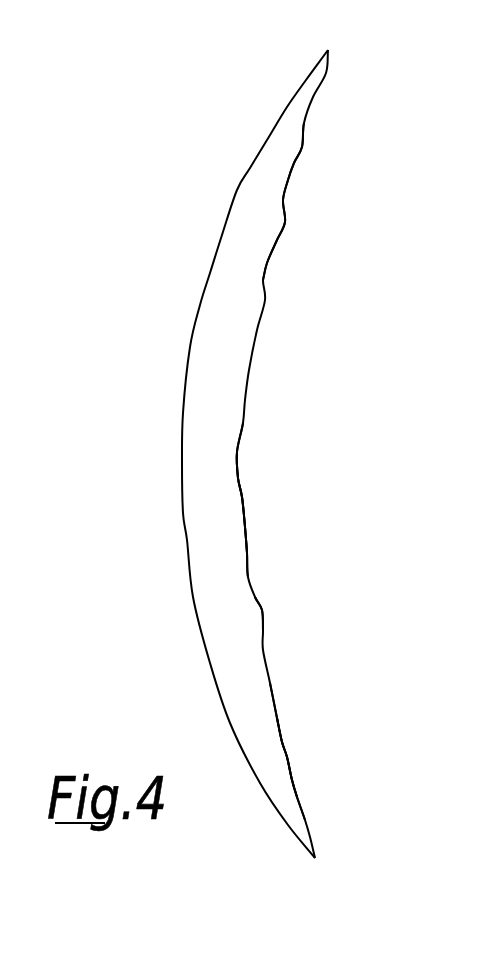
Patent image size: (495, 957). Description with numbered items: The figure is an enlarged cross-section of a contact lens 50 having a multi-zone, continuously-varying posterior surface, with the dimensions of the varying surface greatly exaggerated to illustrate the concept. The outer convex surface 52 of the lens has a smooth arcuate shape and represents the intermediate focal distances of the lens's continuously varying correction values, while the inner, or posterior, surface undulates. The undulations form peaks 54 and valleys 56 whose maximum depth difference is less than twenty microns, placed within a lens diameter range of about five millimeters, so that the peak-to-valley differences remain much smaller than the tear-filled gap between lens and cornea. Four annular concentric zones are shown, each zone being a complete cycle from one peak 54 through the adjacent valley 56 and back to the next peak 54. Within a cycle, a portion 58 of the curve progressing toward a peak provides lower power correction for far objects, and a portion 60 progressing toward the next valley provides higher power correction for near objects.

The contact lens 50 is at (257, 132).
The outer convex surface 52 is at (180, 450).
The peak 54 is at (302, 148).
The valley 56 is at (289, 180).
The portion of the undulating curve progressing toward the adjacent peak 58 is at (245, 527).
The portion of the undulating curve progressing toward the next valley 60 is at (238, 478).